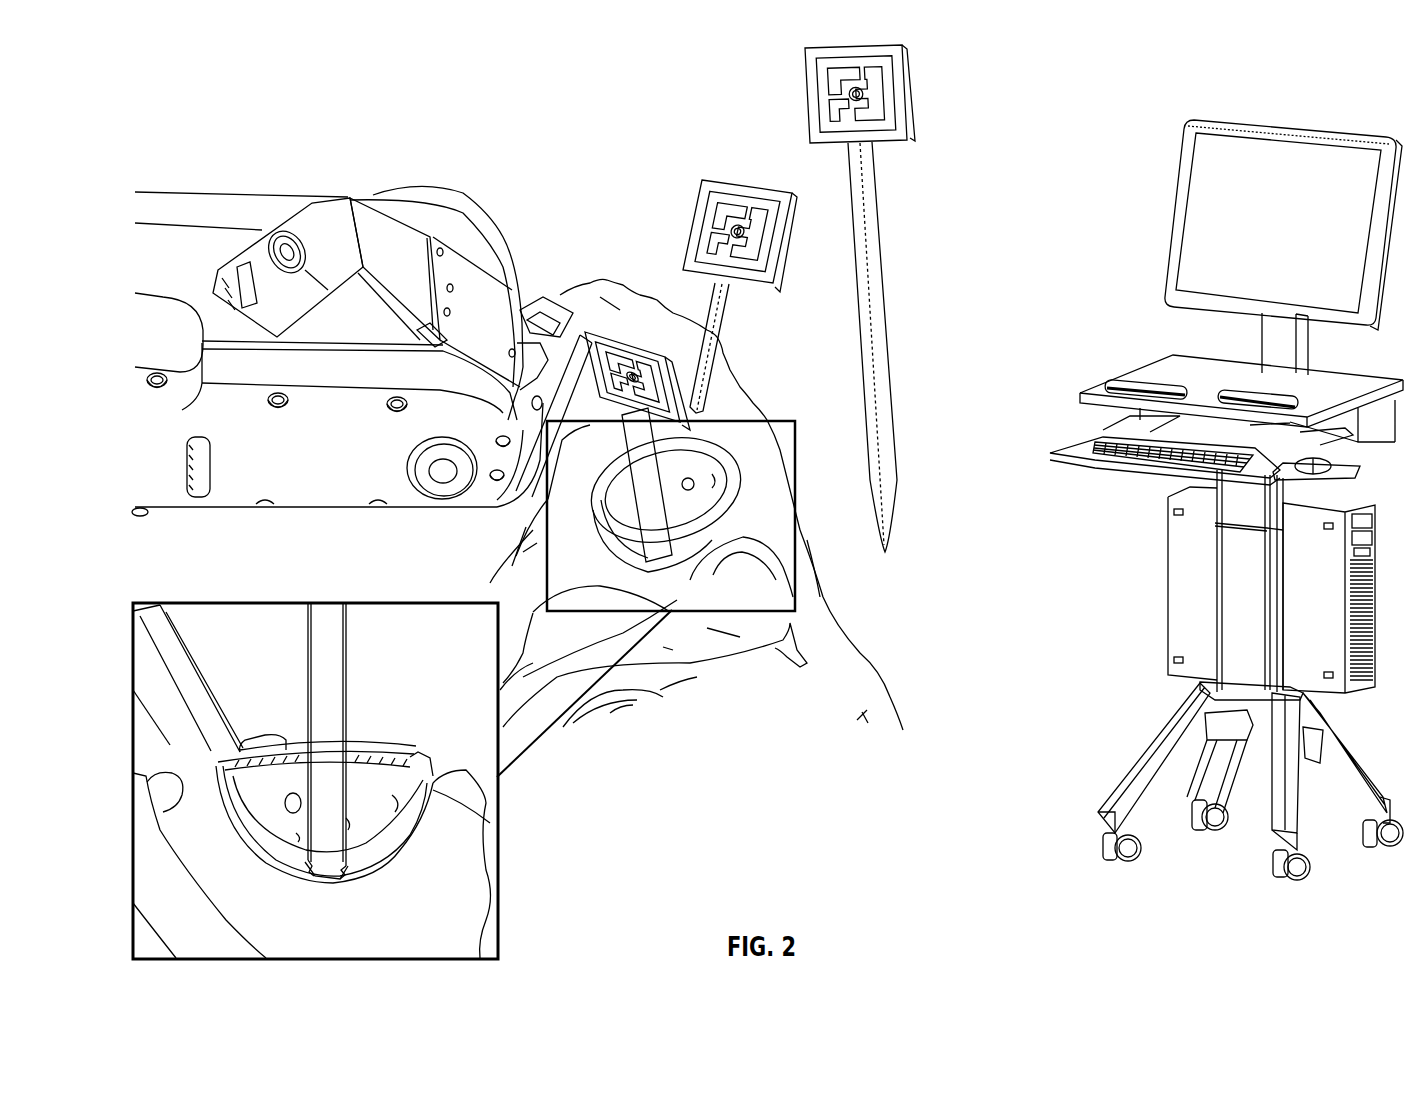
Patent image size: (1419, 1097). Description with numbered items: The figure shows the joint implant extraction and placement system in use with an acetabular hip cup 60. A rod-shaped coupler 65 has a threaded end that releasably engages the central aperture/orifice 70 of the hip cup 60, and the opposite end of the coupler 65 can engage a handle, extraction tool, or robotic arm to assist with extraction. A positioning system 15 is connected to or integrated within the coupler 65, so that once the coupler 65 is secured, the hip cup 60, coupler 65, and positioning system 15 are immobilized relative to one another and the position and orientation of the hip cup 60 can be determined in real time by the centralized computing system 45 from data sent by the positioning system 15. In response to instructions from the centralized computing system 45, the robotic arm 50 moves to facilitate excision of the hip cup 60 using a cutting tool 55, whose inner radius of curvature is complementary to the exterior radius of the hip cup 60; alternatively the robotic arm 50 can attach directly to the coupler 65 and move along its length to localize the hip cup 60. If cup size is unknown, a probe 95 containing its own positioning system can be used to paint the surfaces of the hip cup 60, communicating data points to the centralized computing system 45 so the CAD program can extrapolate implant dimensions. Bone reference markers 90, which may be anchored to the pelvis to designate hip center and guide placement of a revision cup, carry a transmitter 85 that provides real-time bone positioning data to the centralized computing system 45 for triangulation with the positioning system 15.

The positioning system 15 is at (613, 366).
The centralized computing system 45 is at (1185, 563).
The robotic arm 50 is at (370, 452).
The cutting tool 55 is at (206, 763).
The hip cup 60 is at (428, 803).
The coupler 65 is at (323, 786).
The central aperture/orifice 70 is at (338, 876).
The transmitter 85 is at (733, 197).
The bone reference marker 90 is at (726, 311).
The probe 95 is at (880, 263).